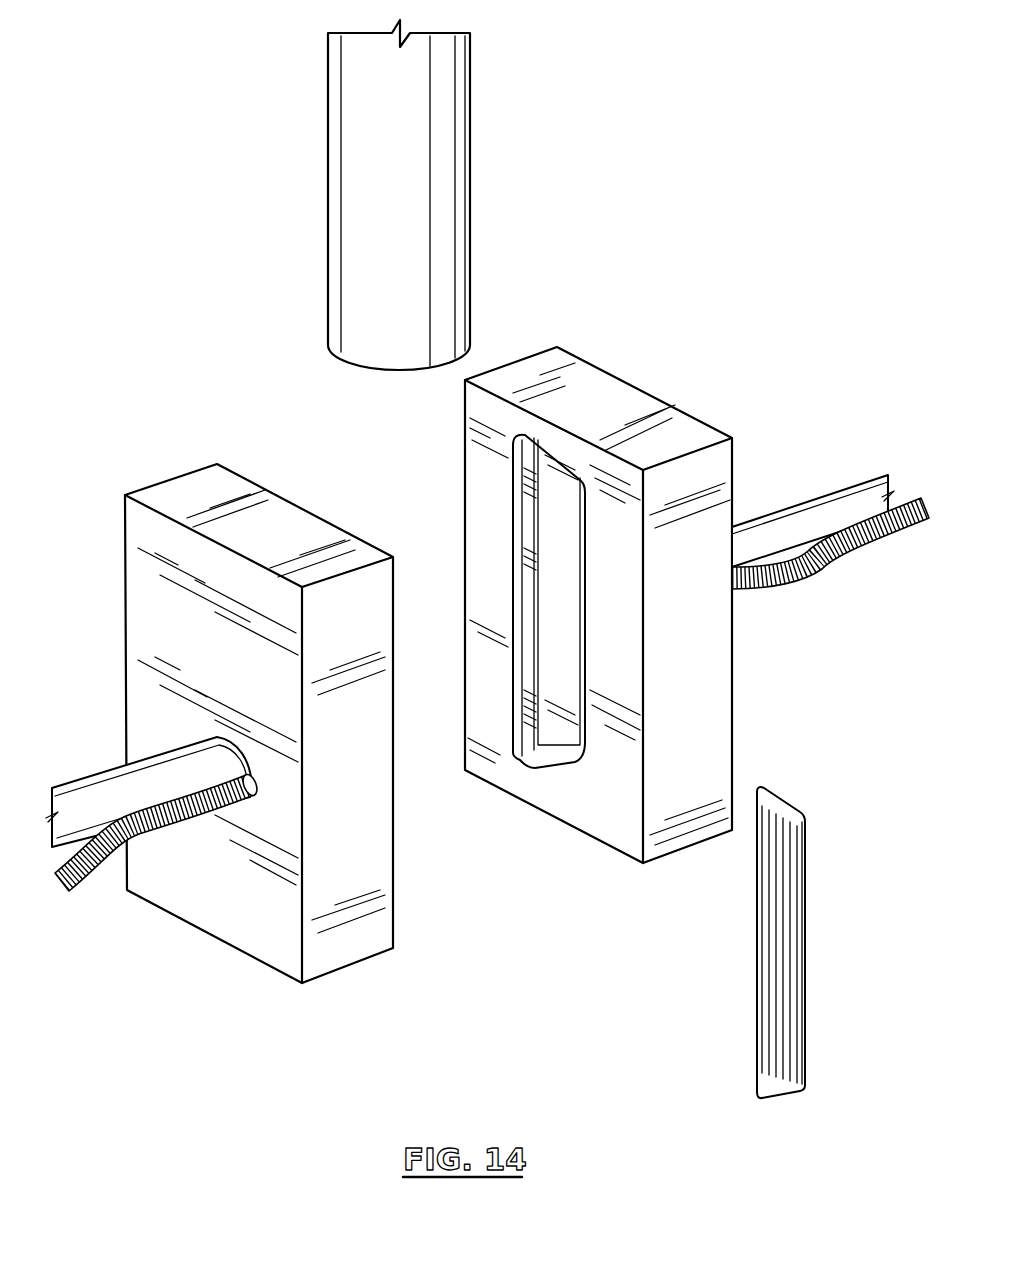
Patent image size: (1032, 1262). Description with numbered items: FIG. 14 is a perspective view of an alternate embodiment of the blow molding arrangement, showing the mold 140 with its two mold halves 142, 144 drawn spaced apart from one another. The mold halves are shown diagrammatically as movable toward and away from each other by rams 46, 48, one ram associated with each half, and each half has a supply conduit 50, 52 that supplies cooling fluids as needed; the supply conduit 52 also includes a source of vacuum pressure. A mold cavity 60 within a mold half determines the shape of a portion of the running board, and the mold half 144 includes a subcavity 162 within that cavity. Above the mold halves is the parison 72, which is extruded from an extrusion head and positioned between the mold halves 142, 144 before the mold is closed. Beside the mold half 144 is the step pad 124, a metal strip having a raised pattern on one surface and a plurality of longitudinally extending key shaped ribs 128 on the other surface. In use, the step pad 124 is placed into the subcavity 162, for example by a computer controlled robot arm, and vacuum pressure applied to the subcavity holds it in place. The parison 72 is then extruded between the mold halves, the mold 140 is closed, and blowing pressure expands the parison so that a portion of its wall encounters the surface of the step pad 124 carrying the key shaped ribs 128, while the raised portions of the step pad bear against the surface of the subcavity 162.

The parison 72 is at (328, 214).
The mold 140 is at (98, 492).
The mold half 142 is at (228, 487).
The mold half 144 is at (619, 599).
The subcavity 162 is at (565, 477).
The mold cavity 60 is at (545, 757).
The ram 46 is at (78, 797).
The ram 48 is at (808, 518).
The supply conduit 50 is at (93, 883).
The supply conduit 52 is at (810, 582).
The step pad 124 is at (744, 912).
The key shaped ribs 128 is at (793, 938).